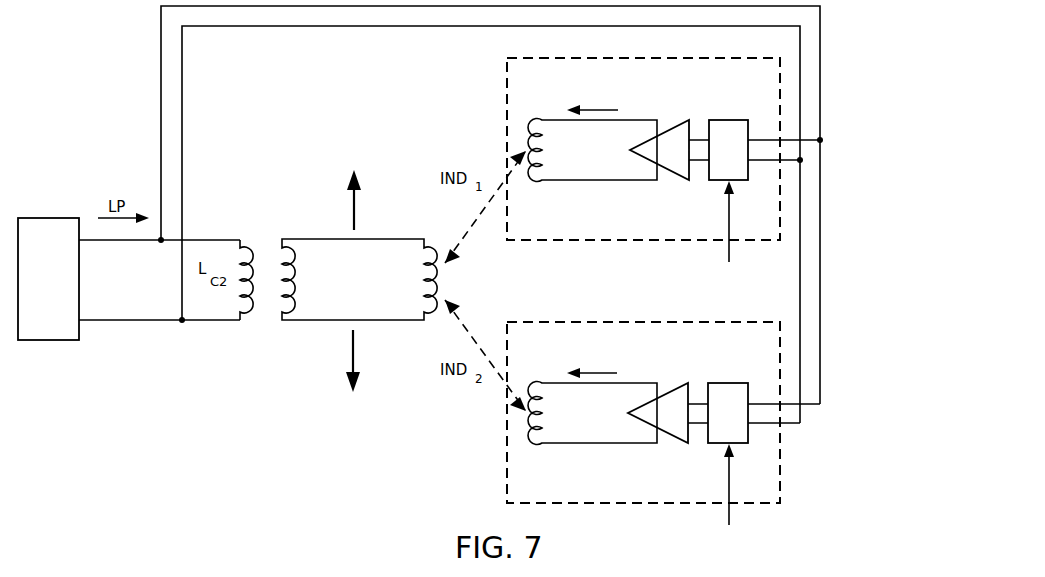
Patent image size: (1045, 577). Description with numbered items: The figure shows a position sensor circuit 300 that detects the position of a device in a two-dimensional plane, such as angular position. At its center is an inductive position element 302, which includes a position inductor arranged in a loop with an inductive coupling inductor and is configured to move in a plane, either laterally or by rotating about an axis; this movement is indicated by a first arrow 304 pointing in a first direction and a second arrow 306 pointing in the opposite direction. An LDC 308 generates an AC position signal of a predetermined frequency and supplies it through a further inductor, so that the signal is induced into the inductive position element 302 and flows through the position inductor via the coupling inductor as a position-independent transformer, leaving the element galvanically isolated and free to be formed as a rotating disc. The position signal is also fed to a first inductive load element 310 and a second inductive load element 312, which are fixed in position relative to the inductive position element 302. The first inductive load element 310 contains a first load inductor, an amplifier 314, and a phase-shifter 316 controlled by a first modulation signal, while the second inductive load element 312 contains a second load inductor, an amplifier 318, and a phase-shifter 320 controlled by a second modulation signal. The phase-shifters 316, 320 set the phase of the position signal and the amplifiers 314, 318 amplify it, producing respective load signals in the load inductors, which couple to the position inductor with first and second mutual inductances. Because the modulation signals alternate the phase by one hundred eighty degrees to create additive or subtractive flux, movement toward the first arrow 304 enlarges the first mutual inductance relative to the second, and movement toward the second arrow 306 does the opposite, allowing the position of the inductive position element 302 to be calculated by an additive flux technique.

The position sensor circuit 300 is at (62, 80).
The inductive position element 302 is at (285, 190).
The first arrow 304 is at (354, 212).
The second arrow 306 is at (353, 352).
The LDC 308 is at (67, 307).
The first inductive load element 310 is at (498, 112).
The second inductive load element 312 is at (497, 449).
The amplifier 314 is at (676, 180).
The phase-shifter 316 is at (742, 120).
The amplifier 318 is at (676, 443).
The phase-shifter 320 is at (742, 383).